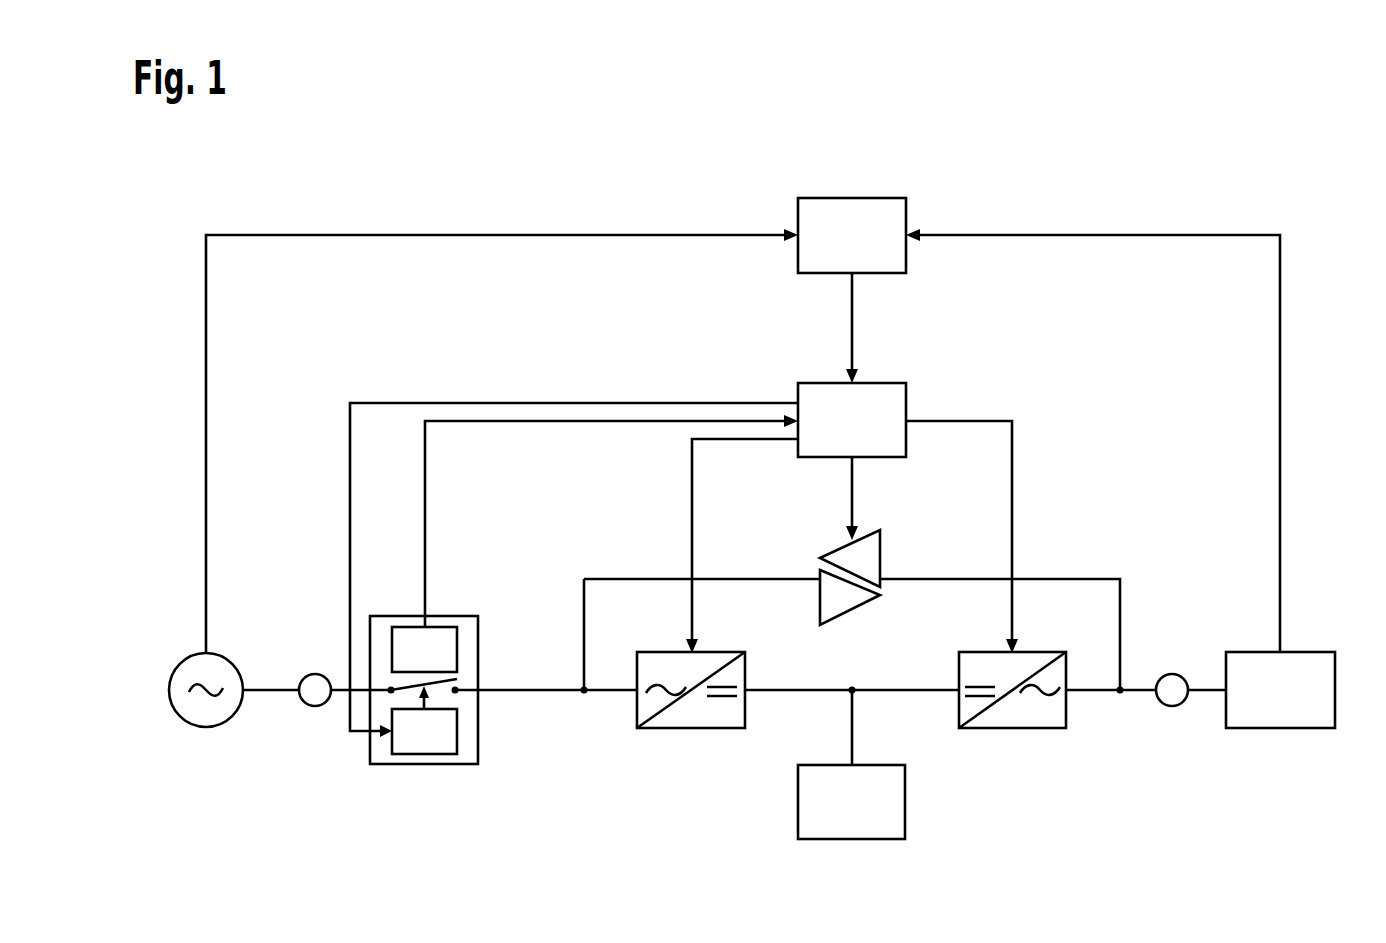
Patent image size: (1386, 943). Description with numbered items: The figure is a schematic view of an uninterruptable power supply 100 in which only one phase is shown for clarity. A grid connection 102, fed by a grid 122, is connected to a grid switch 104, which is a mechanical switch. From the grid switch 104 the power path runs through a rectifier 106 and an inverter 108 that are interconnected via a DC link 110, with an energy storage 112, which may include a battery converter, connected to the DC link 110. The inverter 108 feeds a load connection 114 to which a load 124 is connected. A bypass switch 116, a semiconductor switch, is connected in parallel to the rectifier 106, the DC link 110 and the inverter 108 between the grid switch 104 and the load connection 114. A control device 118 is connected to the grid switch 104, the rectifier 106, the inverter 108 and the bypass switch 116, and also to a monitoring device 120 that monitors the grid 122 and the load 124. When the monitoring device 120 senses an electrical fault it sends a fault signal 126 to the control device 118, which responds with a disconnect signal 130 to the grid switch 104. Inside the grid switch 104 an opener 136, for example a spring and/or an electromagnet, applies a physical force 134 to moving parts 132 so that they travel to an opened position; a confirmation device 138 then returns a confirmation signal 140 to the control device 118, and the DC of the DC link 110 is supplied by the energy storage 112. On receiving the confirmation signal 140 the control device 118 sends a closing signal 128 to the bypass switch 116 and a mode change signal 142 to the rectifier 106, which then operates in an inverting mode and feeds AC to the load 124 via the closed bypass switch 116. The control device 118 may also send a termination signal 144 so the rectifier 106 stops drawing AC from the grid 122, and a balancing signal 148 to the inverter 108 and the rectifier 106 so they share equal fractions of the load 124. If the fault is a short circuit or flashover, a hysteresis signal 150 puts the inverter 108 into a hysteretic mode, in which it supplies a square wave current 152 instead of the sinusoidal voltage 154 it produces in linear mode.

The uninterruptable power supply 100 is at (1207, 182).
The grid connection 102 is at (315, 706).
The grid switch 104 is at (472, 738).
The rectifier 106 is at (693, 728).
The inverter 108 is at (1013, 728).
The DC link 110 is at (893, 693).
The energy storage 112 is at (853, 839).
The load connection 114 is at (1172, 706).
The bypass switch 116 is at (850, 610).
The control device 118 is at (908, 400).
The monitoring device 120 is at (853, 198).
The grid 122 is at (207, 727).
The load 124 is at (1280, 728).
The fault signal 126 is at (855, 300).
The closing signal 128 is at (855, 510).
The disconnect signal 130 is at (487, 403).
The moving parts 132 is at (448, 690).
The physical force 134 is at (437, 684).
The opener 136 is at (457, 731).
The confirmation device 138 is at (458, 648).
The confirmation signal 140 is at (607, 421).
The mode change signal 142 is at (725, 480).
The termination signal 144 is at (725, 480).
The balancing signal 148 is at (727, 439).
The hysteresis signal 150 is at (1013, 510).
The square wave current 152 is at (1103, 747).
The sinusoidal voltage 154 is at (1093, 693).